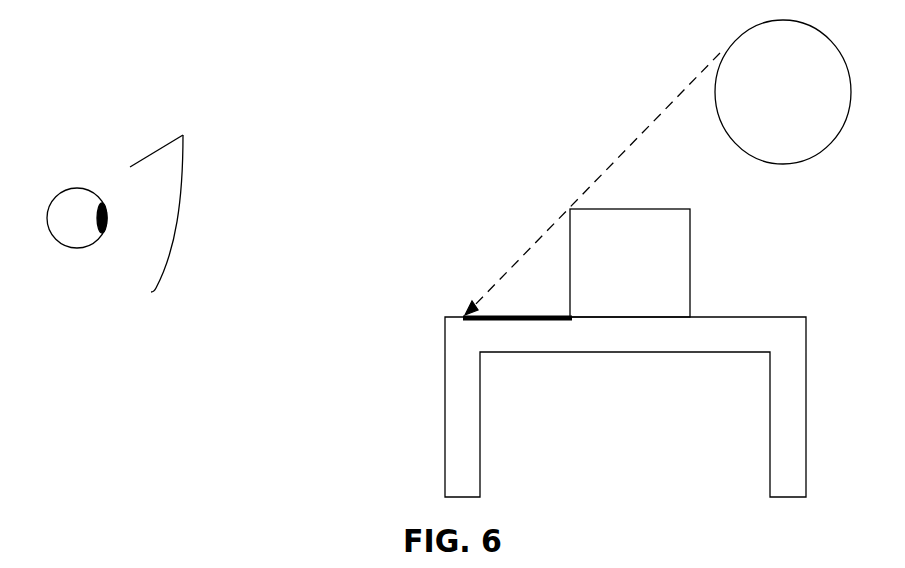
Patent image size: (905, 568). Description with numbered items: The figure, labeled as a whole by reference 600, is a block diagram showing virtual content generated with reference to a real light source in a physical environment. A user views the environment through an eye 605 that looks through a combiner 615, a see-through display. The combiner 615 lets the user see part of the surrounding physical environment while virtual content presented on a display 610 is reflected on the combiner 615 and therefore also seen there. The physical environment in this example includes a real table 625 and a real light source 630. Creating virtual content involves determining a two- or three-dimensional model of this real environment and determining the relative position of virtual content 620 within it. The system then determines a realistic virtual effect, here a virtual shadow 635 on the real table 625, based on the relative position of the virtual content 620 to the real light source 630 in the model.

The mixed reality system 600 is at (92, 38).
The eye 605 is at (60, 248).
The display 610 is at (156, 148).
The combiner 615 is at (183, 162).
The virtual content 620 is at (647, 301).
The real table 625 is at (806, 342).
The real light source 630 is at (800, 130).
The virtual shadow 635 is at (507, 315).